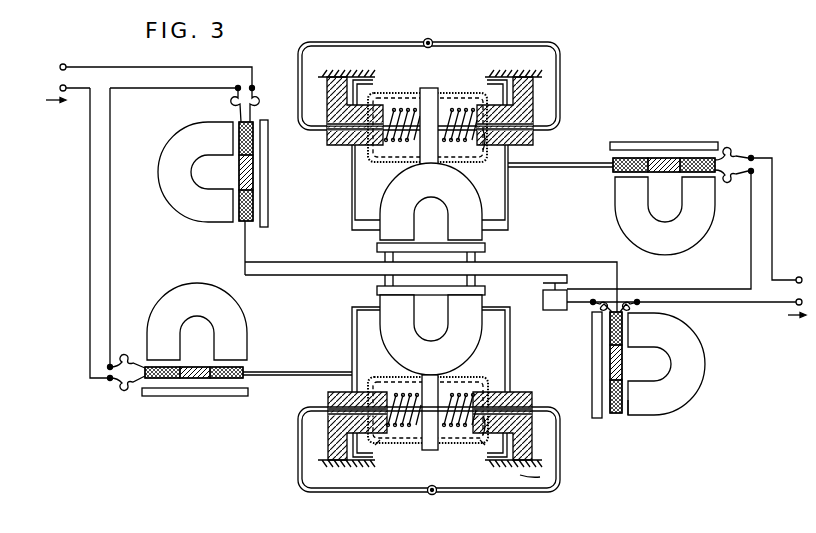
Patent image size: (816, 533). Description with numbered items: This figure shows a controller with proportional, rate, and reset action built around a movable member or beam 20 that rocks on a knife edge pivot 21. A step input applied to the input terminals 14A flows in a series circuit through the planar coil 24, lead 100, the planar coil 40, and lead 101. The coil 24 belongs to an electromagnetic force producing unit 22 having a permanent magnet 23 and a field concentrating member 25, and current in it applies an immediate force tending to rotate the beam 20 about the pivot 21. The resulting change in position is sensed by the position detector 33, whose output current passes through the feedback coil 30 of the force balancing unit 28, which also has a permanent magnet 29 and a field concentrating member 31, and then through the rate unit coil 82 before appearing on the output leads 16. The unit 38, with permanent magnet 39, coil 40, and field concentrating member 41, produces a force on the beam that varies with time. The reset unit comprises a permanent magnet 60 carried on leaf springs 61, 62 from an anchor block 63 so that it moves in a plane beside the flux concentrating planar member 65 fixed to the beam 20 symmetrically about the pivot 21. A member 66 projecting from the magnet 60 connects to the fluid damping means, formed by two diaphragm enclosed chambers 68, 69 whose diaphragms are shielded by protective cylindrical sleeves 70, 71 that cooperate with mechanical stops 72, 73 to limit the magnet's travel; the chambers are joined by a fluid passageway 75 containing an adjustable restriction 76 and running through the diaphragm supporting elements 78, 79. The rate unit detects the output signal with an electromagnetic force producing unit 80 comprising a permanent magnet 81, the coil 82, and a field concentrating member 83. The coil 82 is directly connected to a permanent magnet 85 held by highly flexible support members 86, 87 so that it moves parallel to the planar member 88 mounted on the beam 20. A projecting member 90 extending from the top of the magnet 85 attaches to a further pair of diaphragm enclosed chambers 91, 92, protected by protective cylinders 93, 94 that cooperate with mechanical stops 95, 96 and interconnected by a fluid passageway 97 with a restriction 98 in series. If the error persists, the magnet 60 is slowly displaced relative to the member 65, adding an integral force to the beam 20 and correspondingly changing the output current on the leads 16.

The input terminals 14A is at (75, 64).
The output leads 16 is at (790, 278).
The movable member 20 is at (303, 268).
The knife edge pivot 21 is at (431, 273).
The electromagnetic force producing unit 22 is at (220, 115).
The permanent magnet 23 is at (172, 182).
The planar coil 24 is at (250, 223).
The field concentrating member 25 is at (268, 172).
The force balancing unit 28 is at (632, 422).
The permanent magnet 29 is at (695, 356).
The planar coil 30 is at (615, 414).
The field concentrating member 31 is at (592, 369).
The position detector 33 is at (562, 316).
The electromagnetic force producing unit 38 is at (130, 399).
The permanent magnet 39 is at (170, 298).
The planar coil 40 is at (244, 367).
The field concentrating member 41 is at (205, 396).
The permanent magnet 60 is at (420, 352).
The leaf spring 61 is at (352, 340).
The leaf spring 62 is at (509, 342).
The anchor block 63 is at (522, 475).
The flux concentrating planar member 65 is at (487, 291).
The member 66 is at (430, 450).
The chamber 68 is at (408, 432).
The chamber 69 is at (455, 432).
The protective cylindrical sleeve 70 is at (386, 448).
The protective cylindrical sleeve 71 is at (476, 448).
The mechanical stop 72 is at (365, 388).
The mechanical stop 73 is at (500, 388).
The fluid passageway 75 is at (400, 492).
The adjustable restriction 76 is at (436, 494).
The diaphragm supporting element 78 is at (330, 392).
The diaphragm supporting element 79 is at (522, 392).
The electromagnetic force producing unit 80 is at (735, 136).
The permanent magnet 81 is at (622, 208).
The coil 82 is at (614, 159).
The field concentrating member 83 is at (668, 142).
The permanent magnet 85 is at (425, 187).
The flexible support member 86 is at (510, 188).
The flexible support member 87 is at (352, 188).
The planar member 88 is at (377, 248).
The plunger 90 is at (428, 88).
The chamber 91 is at (452, 100).
The chamber 92 is at (400, 100).
The protective cylinder 93 is at (470, 162).
The protective cylinder 94 is at (392, 162).
The mechanical stop 95 is at (495, 92).
The mechanical stop 96 is at (362, 92).
The fluid passageway 97 is at (376, 42).
The restriction 98 is at (432, 40).
The lead 100 is at (112, 250).
The lead 101 is at (90, 250).